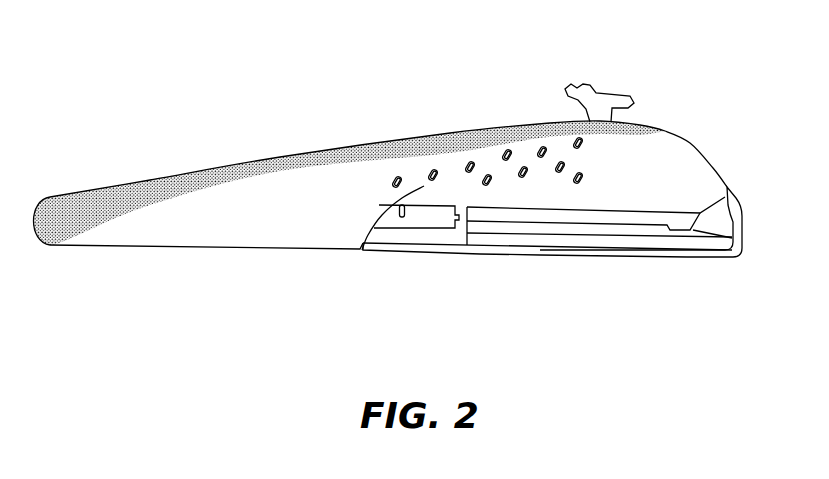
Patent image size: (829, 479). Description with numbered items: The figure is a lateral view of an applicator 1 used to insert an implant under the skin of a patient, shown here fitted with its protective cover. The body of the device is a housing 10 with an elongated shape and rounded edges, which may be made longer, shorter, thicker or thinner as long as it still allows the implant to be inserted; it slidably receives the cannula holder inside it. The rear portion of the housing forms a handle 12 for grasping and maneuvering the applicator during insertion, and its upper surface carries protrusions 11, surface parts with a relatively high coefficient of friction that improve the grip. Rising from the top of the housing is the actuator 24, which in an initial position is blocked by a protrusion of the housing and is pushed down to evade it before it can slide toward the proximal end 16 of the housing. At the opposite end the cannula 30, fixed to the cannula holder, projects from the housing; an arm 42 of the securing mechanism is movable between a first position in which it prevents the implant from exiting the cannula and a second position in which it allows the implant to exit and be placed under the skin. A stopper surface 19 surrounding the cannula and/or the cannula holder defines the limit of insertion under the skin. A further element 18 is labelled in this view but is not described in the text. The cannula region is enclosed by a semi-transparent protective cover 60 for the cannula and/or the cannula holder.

The applicator 1 is at (265, 117).
The housing 10 is at (335, 150).
The protrusion 11 is at (452, 137).
The handle 12 is at (663, 130).
The proximal end 16 is at (47, 197).
The slider block 18 is at (408, 252).
The stopper surface 19 is at (497, 253).
The actuator 24 is at (603, 93).
The cannula 30 is at (682, 257).
The arm 42 is at (743, 218).
The protective cover 60 is at (568, 257).